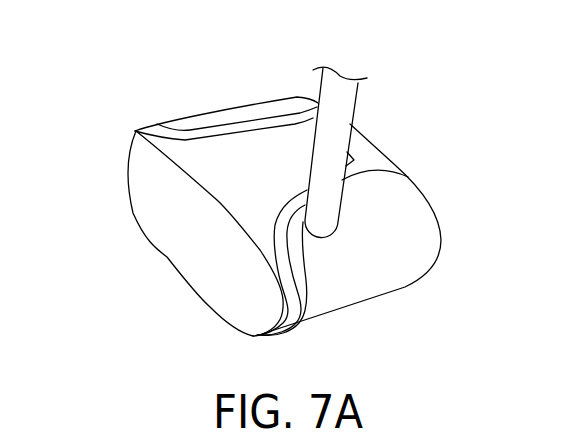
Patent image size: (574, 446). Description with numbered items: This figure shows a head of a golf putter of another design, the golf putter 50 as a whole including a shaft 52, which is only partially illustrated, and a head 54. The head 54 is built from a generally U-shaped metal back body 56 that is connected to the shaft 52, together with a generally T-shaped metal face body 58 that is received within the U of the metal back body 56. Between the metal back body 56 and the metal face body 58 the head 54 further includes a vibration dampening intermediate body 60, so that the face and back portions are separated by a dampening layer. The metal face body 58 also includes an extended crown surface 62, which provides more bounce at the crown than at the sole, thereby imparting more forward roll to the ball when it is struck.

The golf putter 50 is at (84, 70).
The shaft 52 is at (343, 103).
The head 54 is at (457, 206).
The metal back body 56 is at (370, 267).
The metal face body 58 is at (192, 158).
The vibration dampening intermediate body 60 is at (368, 150).
The extended crown surface 62 is at (177, 240).